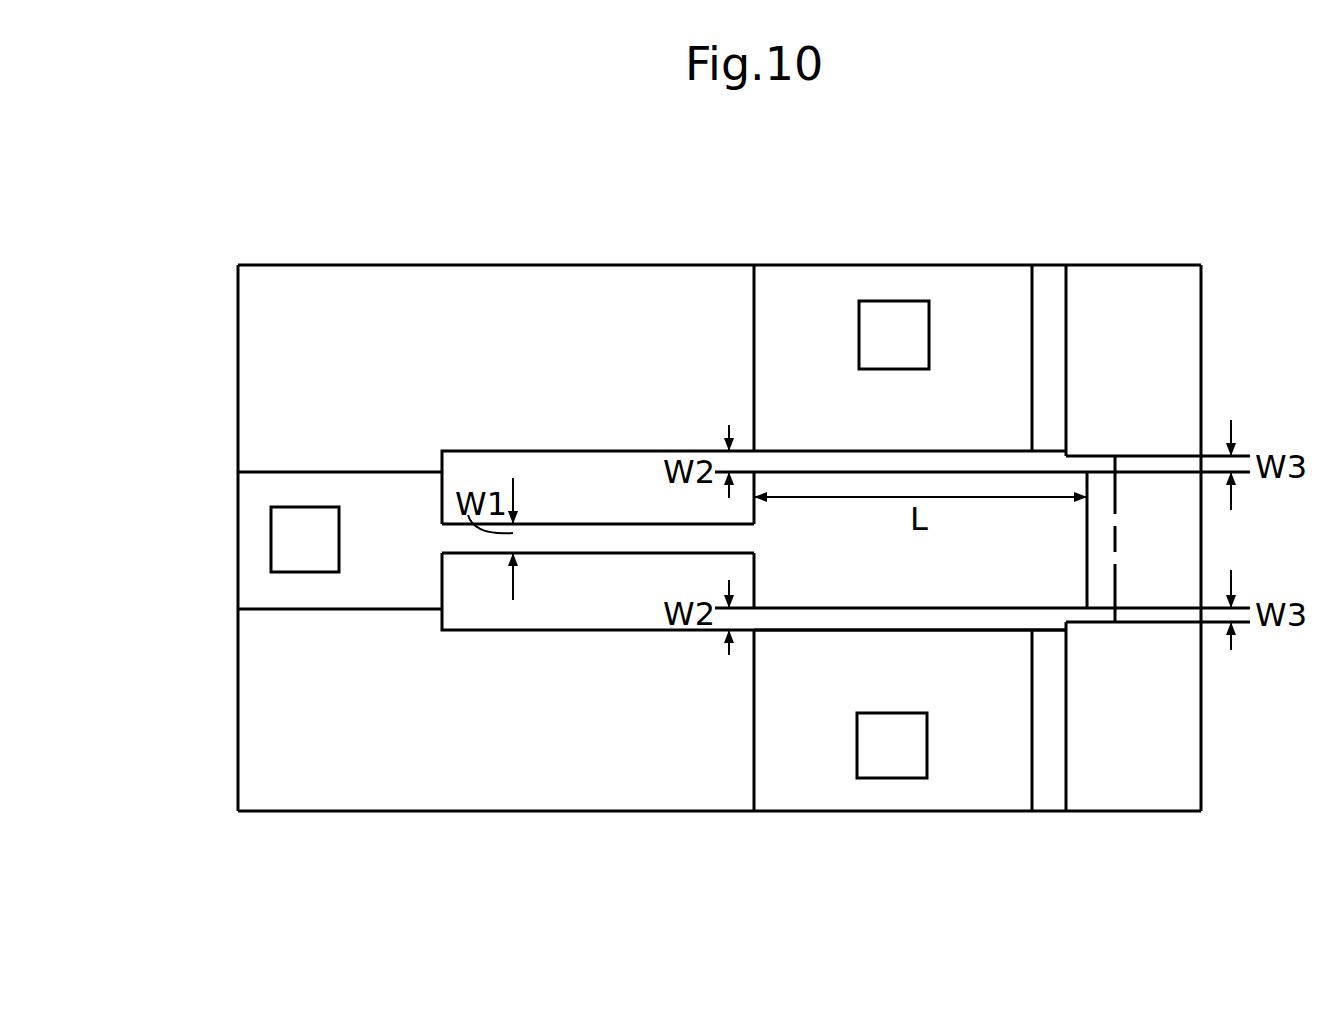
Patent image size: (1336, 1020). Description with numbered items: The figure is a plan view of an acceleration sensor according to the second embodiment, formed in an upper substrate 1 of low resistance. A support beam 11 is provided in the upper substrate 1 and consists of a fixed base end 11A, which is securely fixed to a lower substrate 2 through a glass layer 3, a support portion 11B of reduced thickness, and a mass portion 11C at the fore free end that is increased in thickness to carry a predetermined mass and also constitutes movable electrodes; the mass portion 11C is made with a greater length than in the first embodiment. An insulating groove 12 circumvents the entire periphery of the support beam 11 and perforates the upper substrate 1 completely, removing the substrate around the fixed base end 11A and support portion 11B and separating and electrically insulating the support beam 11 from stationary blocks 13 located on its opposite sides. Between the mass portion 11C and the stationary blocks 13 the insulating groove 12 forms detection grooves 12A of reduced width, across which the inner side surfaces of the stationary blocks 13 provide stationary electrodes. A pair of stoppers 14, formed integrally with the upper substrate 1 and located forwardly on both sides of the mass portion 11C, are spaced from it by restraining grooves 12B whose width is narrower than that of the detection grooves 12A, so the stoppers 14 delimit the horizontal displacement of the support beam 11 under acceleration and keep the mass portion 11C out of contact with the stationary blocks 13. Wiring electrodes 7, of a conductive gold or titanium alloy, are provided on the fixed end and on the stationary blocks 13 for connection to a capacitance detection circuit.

The upper substrate 1 is at (1208, 302).
The lower substrate 2 is at (543, 597).
The glass layer 3 is at (358, 745).
The wiring electrodes 7 is at (292, 540).
The support beam 11 is at (569, 524).
The fixed base end 11A is at (253, 490).
The support portion 11B is at (610, 540).
The mass portion 11C is at (992, 577).
The insulating groove 12 is at (1047, 340).
The detection grooves 12A is at (828, 460).
The restraining grooves 12B is at (1160, 460).
The stationary blocks 13 is at (992, 292).
The stoppers 14 is at (1153, 294).